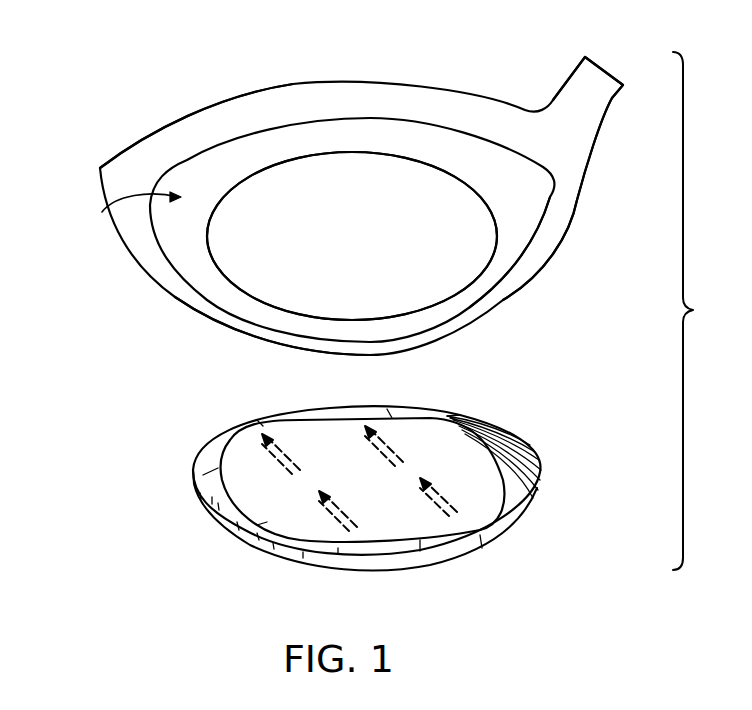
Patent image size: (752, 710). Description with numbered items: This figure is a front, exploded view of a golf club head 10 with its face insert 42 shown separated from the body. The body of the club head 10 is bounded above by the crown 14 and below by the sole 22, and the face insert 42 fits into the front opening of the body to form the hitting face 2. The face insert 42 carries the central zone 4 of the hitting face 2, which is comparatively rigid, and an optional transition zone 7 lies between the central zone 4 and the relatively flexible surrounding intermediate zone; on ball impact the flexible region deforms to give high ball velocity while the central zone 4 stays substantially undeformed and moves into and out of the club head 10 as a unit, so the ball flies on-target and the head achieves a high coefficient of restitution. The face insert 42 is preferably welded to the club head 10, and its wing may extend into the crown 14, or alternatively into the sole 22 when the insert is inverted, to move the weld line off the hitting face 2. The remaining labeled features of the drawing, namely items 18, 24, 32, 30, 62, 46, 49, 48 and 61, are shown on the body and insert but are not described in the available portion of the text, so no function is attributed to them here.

The club head 10 is at (352, 191).
The crown 14 is at (290, 84).
The heel 18 is at (100, 169).
The sole 22 is at (263, 343).
The hosel 24 is at (603, 101).
The body wall 32 is at (577, 199).
The face opening wall 62 is at (517, 237).
The front portion of body 30 is at (554, 252).
The recessed ledge 46 is at (200, 152).
The opening edge 49 is at (385, 155).
The face opening 48 is at (366, 251).
The hitting face 2 is at (127, 211).
The face insert 42 is at (341, 504).
The tapered transition region 61 is at (523, 444).
The central zone 4 is at (381, 523).
The transition zone 7 is at (457, 540).